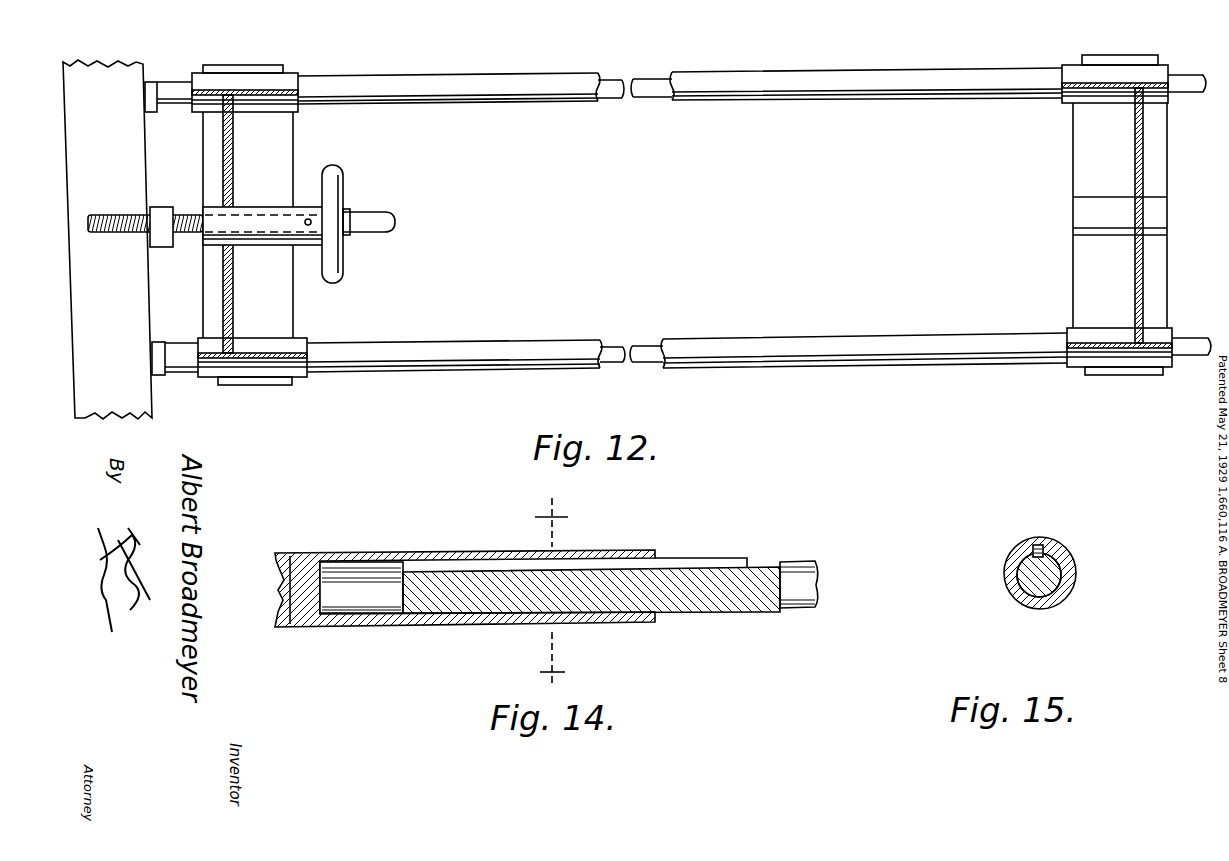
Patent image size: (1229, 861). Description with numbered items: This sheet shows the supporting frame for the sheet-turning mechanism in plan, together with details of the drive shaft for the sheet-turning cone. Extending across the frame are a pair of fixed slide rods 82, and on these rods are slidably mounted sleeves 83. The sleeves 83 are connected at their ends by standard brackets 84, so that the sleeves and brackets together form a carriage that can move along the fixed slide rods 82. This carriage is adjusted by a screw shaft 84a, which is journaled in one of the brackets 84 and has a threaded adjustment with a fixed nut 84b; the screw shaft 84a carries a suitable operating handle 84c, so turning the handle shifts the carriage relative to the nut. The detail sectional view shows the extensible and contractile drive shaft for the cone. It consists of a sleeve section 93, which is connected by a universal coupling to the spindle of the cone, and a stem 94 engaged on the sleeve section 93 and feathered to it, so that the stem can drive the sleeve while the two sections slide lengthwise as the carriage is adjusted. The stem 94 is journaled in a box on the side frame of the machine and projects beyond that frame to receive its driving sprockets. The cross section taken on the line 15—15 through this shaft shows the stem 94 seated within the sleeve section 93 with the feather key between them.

In FIG. 12, the fixed slide rod 82 is at (655, 90).
In FIG. 12, the sleeve 83 is at (515, 98).
In FIG. 12, the standard bracket 84 is at (283, 298).
In FIG. 12, the screw shaft 84a is at (112, 213).
In FIG. 12, the fixed nut 84b is at (157, 245).
In FIG. 12, the operating handle 84c is at (343, 177).
In FIG. 14, the sleeve section 93 is at (313, 553).
In FIG. 15, the sleeve section 93 is at (1008, 563).
In FIG. 14, the stem 94 is at (785, 565).
In FIG. 15, the stem 94 is at (1052, 570).
In FIG. 14, the section line 15- 15 is at (561, 589).